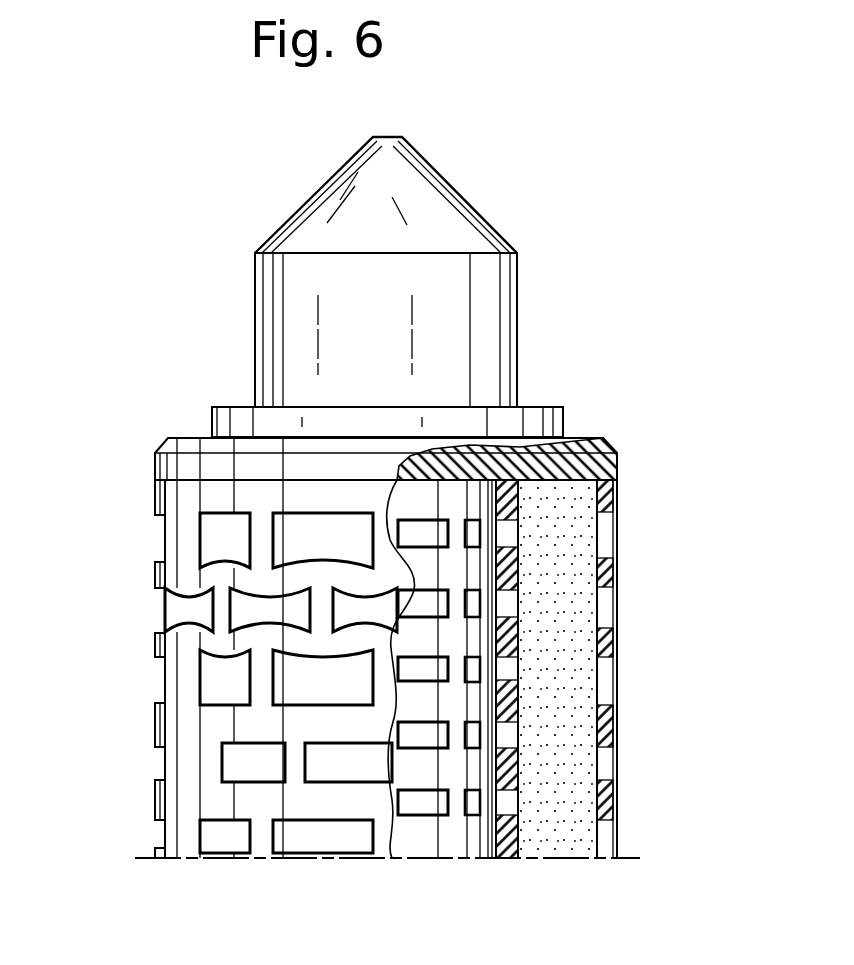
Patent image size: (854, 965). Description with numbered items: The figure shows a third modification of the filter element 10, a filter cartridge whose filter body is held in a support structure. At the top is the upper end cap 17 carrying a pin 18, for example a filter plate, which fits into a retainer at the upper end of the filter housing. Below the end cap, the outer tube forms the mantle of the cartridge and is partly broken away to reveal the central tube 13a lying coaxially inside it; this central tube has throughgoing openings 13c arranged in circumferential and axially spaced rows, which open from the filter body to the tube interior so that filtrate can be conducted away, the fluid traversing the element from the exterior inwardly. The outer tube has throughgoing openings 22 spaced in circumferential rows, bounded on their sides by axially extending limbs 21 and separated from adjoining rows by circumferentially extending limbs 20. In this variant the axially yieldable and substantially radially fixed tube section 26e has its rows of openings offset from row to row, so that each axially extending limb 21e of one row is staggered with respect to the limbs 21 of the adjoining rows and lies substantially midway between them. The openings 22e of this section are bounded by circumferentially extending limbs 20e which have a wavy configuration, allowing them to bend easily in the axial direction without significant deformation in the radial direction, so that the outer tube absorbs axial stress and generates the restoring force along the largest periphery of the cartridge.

The filter element 10 is at (537, 279).
The pin 18 is at (445, 203).
The upper end cap 17 is at (172, 463).
The central tube 13a is at (472, 758).
The throughgoing openings 13c is at (436, 531).
The circumferentially extending limbs 20e is at (222, 572).
The circumferentially extending limbs 20 is at (160, 790).
The axially yieldable tube section 26e is at (163, 604).
The axially extending limb 21e is at (222, 600).
The openings 22e is at (290, 618).
The axially extending limbs 21 is at (262, 678).
The throughgoing openings 22 is at (330, 763).